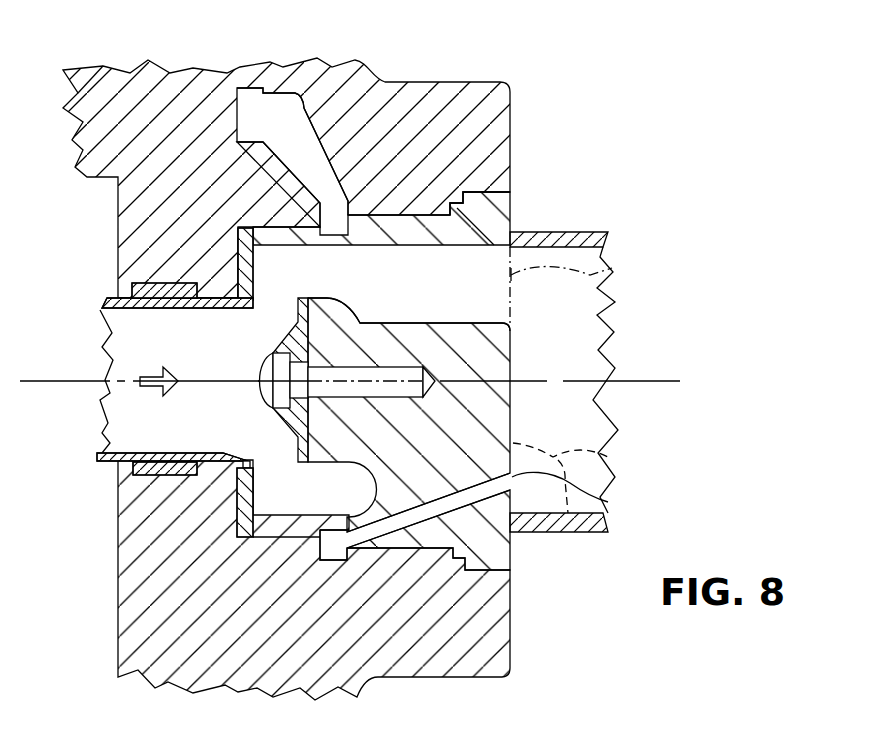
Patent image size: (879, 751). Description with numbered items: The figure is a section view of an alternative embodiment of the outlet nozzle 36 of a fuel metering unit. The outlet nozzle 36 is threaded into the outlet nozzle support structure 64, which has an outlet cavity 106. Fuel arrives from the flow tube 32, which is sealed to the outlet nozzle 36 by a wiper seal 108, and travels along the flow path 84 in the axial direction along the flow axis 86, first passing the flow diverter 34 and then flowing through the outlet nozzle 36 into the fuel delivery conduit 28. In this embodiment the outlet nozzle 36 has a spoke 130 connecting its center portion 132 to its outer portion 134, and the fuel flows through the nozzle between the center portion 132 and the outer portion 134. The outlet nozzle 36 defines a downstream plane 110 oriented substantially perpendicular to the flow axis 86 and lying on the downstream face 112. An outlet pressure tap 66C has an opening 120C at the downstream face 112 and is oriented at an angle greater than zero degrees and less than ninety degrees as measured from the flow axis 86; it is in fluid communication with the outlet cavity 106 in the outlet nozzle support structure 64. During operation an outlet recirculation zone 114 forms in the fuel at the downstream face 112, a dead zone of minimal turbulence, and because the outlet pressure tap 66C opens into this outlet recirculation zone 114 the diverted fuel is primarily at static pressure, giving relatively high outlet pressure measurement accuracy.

The fuel delivery conduit 28 is at (577, 232).
The flow tube 32 is at (113, 458).
The flow diverter 34 is at (262, 397).
The outlet nozzle 36 is at (483, 193).
The outlet nozzle support structure 64 is at (440, 93).
The outlet pressure tap 66C is at (453, 500).
The flow path 84 is at (157, 377).
The flow axis 86 is at (82, 377).
The outlet cavity 106 is at (292, 136).
The wiper seal 108 is at (163, 283).
The downstream plane 110 is at (608, 273).
The downstream face 112 is at (513, 213).
The outlet recirculation zone 114 is at (608, 455).
The opening 120C is at (603, 500).
The spoke 130 is at (512, 415).
The center portion 132 is at (512, 342).
The outer portion 134 is at (512, 553).